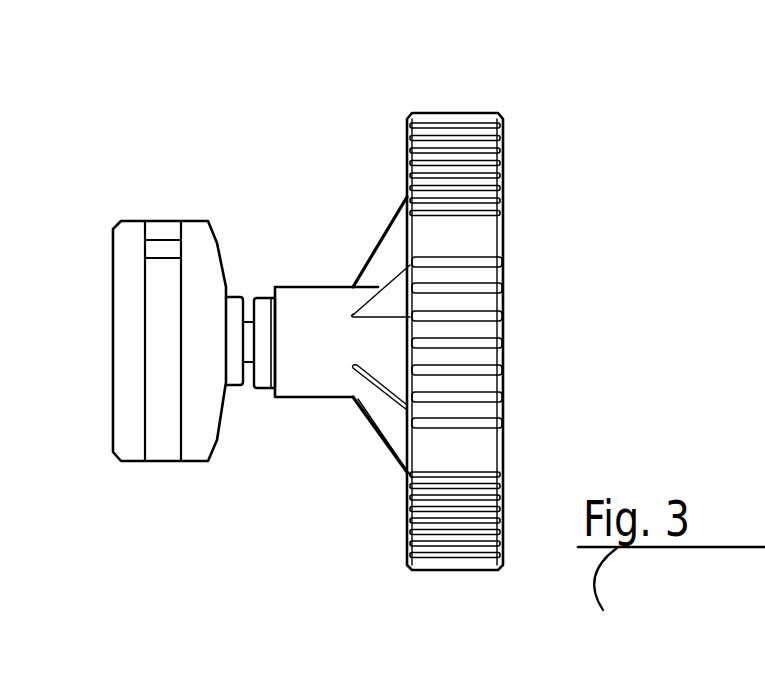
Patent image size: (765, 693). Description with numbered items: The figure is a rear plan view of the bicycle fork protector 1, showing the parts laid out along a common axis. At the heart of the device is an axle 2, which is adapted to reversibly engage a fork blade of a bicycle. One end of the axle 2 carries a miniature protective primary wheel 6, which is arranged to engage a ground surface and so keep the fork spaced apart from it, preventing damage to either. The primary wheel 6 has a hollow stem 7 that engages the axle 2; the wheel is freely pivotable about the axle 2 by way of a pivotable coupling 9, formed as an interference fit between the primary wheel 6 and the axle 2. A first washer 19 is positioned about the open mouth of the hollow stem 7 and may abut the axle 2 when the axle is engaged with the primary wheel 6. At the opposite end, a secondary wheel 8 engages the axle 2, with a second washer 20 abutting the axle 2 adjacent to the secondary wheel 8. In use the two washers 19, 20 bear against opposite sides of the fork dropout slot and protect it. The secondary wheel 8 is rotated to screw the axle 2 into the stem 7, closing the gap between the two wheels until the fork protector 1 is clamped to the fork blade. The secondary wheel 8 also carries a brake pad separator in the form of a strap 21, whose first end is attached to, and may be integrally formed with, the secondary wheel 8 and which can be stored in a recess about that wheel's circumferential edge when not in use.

The bicycle fork protector 1 is at (278, 157).
The axle 2 is at (246, 358).
The primary wheel 6 is at (505, 172).
The stem 7 is at (303, 394).
The secondary wheel 8 is at (113, 335).
The pivotable coupling 9 is at (272, 339).
The first washer 19 is at (248, 268).
The second washer 20 is at (232, 383).
The strap 21 is at (165, 442).